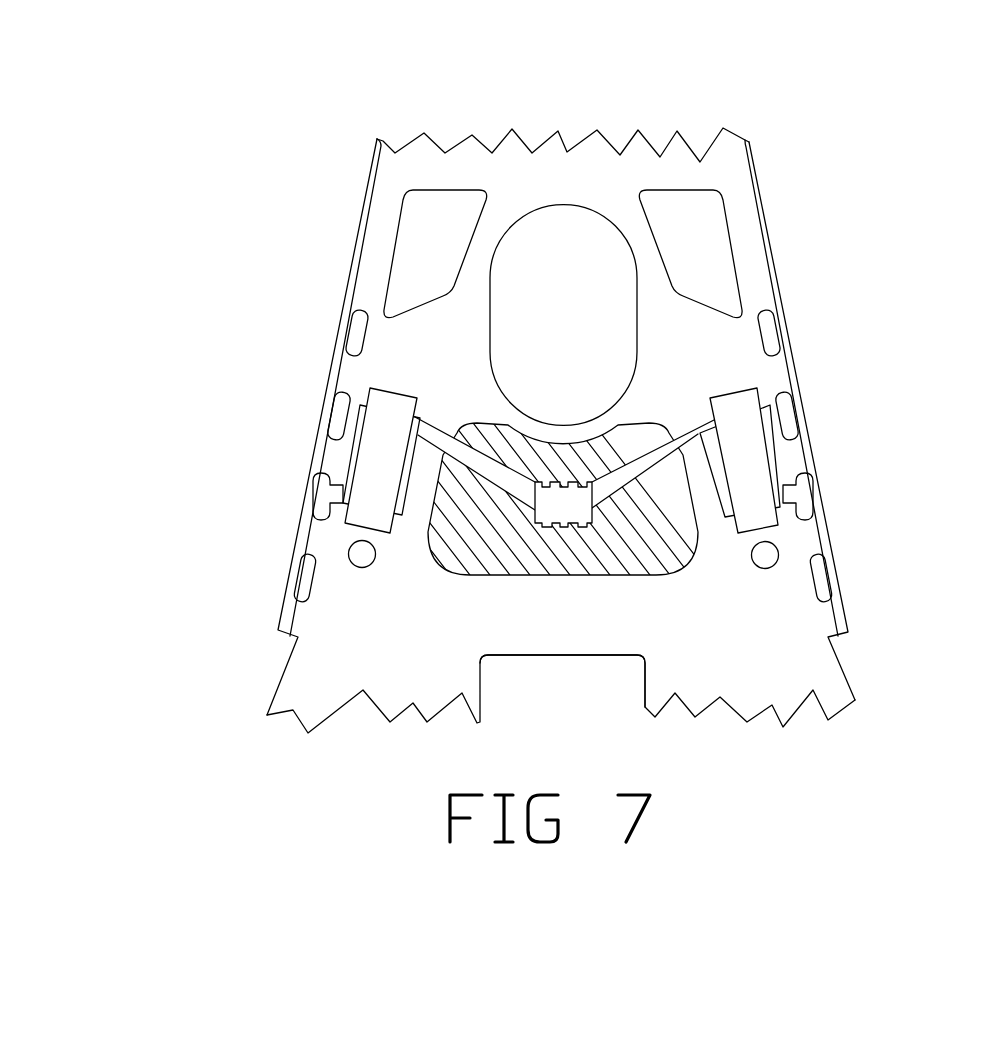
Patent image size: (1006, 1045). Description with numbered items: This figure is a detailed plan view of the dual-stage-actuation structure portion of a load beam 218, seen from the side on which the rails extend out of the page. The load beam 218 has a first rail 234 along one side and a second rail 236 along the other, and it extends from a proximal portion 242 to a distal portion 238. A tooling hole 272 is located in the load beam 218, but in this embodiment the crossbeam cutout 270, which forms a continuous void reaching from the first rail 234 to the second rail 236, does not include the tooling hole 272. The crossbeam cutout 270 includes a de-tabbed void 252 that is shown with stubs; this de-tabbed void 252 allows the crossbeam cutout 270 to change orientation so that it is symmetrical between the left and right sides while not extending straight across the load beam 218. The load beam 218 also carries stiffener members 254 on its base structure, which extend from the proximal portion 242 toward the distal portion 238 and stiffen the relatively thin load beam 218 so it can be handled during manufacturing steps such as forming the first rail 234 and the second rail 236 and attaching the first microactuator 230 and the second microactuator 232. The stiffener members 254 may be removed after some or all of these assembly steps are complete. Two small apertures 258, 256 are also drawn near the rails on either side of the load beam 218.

The load beam 218 is at (728, 74).
The tooling hole 272 is at (555, 205).
The second rail 236 is at (352, 283).
The first rail 234 is at (773, 297).
The distal portion 238 is at (433, 380).
The crossbeam cutout 270 is at (692, 432).
The second microactuator 232 is at (378, 448).
The first microactuator 230 is at (753, 457).
The left aperture 258 is at (348, 551).
The right aperture 256 is at (779, 558).
The de-tabbed void 252 is at (548, 523).
The stiffener members 254 is at (460, 575).
The proximal portion 242 is at (773, 644).